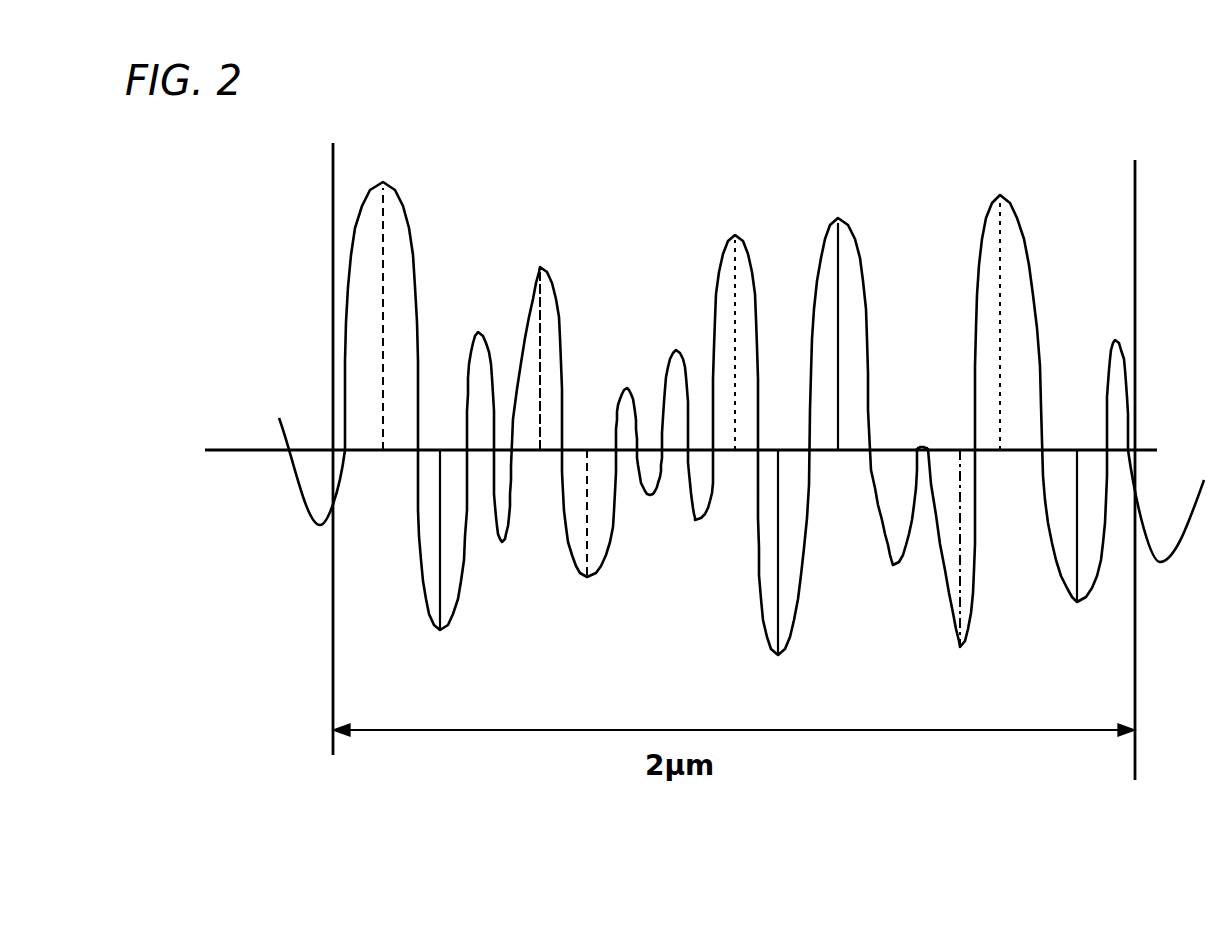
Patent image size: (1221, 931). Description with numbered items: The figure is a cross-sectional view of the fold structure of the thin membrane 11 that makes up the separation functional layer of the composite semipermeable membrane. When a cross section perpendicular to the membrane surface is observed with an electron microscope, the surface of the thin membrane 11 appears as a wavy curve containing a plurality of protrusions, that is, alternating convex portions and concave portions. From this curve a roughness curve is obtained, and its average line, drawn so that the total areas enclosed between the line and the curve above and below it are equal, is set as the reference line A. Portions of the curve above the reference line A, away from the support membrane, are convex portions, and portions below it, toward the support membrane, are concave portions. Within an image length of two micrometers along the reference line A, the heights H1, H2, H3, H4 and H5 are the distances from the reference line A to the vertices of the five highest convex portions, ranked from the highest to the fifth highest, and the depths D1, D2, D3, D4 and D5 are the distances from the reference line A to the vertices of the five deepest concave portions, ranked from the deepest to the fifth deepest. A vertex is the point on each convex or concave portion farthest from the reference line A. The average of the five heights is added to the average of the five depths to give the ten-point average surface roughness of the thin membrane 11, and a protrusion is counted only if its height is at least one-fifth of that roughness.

The thin membrane 11 is at (1074, 155).
The reference line A is at (706, 432).
The height of highest convex portion H1 is at (386, 291).
The height of second highest convex portion H2 is at (998, 299).
The height of third highest convex portion H3 is at (838, 313).
The height of fourth highest convex portion H4 is at (740, 321).
The height of fifth highest convex portion H5 is at (545, 334).
The depth of deepest concave portion D1 is at (780, 576).
The depth of second deepest concave portion D2 is at (958, 572).
The depth of third deepest concave portion D3 is at (435, 564).
The depth of fourth deepest concave portion D4 is at (1075, 551).
The depth of fifth deepest concave portion D5 is at (568, 537).